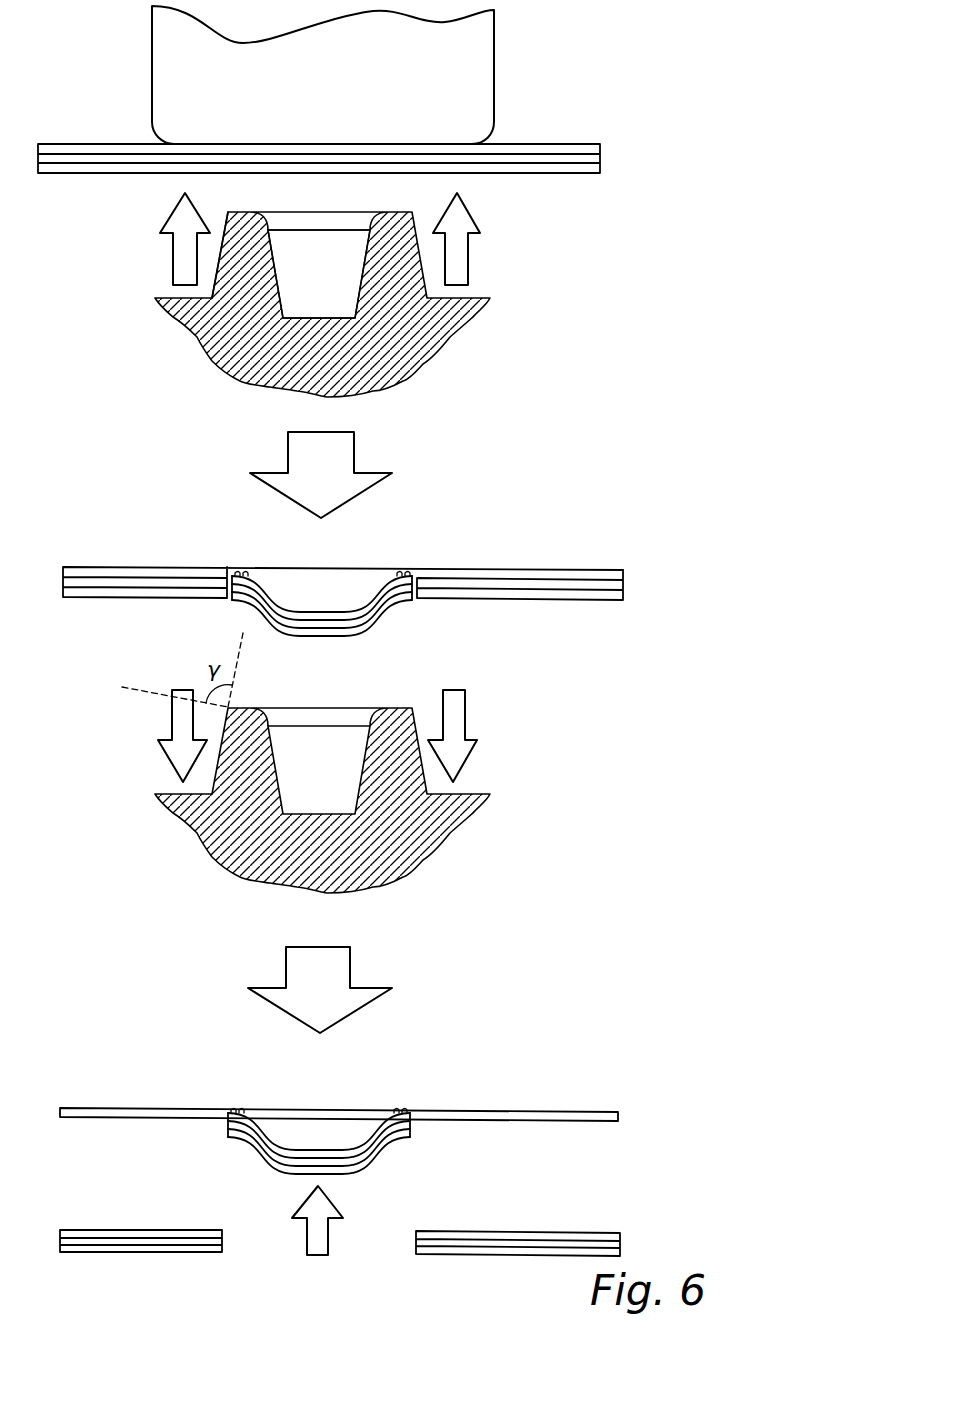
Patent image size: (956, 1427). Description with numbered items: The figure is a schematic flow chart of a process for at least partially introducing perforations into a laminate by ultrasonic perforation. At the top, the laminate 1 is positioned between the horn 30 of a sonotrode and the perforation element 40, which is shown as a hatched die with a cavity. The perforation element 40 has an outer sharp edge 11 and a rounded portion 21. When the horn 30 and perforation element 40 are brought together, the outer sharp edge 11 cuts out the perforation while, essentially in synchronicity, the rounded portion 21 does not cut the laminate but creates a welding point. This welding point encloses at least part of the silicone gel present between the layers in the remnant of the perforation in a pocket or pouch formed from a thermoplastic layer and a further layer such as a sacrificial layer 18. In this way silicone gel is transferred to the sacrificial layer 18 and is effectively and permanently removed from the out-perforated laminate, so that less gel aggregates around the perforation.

The laminate 1 is at (612, 160).
The outer sharp edge 11 is at (228, 212).
The sacrificial layer 18 is at (363, 568).
The rounded portion 21 is at (272, 212).
The horn 30 is at (494, 43).
The perforation element 40 is at (322, 236).